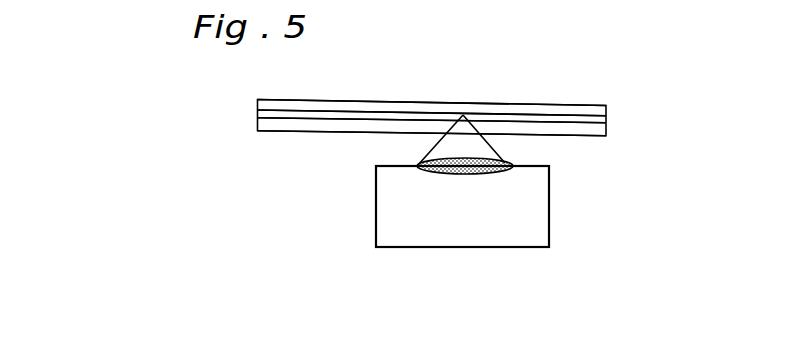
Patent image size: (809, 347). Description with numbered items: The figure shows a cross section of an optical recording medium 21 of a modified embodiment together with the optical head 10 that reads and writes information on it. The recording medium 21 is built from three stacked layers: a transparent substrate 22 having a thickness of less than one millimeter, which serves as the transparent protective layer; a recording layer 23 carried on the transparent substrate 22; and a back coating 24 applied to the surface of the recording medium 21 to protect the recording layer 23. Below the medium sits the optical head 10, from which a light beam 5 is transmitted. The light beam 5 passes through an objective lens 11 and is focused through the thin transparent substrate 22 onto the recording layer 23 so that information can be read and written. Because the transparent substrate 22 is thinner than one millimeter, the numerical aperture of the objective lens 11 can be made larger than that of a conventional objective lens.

The light beam 5 is at (440, 148).
The optical head 10 is at (549, 222).
The objective lens 11 is at (510, 168).
The recording medium 21 is at (517, 116).
The transparent substrate 22 is at (607, 128).
The recording layer 23 is at (607, 117).
The back coating 24 is at (607, 109).